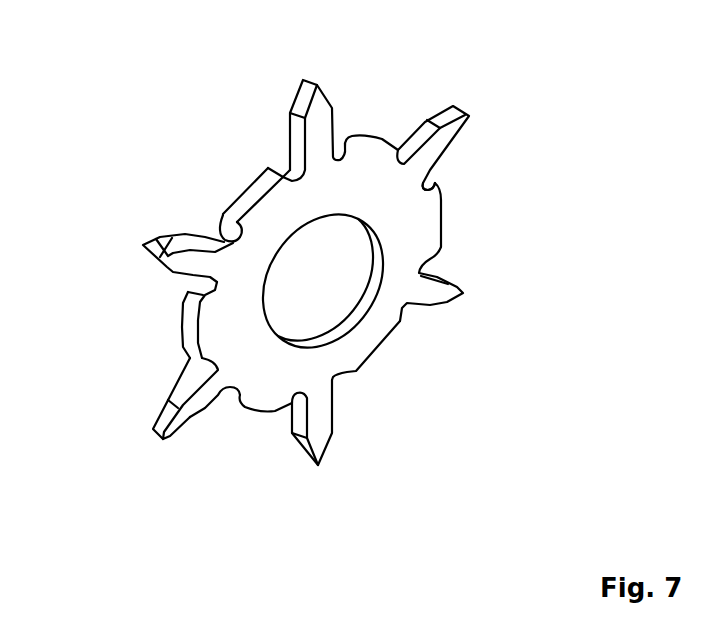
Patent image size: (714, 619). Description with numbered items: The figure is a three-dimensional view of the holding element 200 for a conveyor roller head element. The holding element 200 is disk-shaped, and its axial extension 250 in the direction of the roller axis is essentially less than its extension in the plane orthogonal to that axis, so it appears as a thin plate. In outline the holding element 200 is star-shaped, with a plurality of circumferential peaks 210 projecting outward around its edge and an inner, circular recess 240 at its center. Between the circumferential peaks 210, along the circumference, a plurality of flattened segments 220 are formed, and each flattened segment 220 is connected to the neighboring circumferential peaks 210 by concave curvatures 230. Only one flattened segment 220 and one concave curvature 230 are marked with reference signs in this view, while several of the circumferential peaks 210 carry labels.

The holding element 200 is at (468, 468).
The circumferential peaks 210 is at (333, 112).
The flattened segments 220 is at (378, 358).
The concave curvatures 230 is at (440, 180).
The inner circular recess 240 is at (337, 289).
The axial extension 250 is at (249, 199).